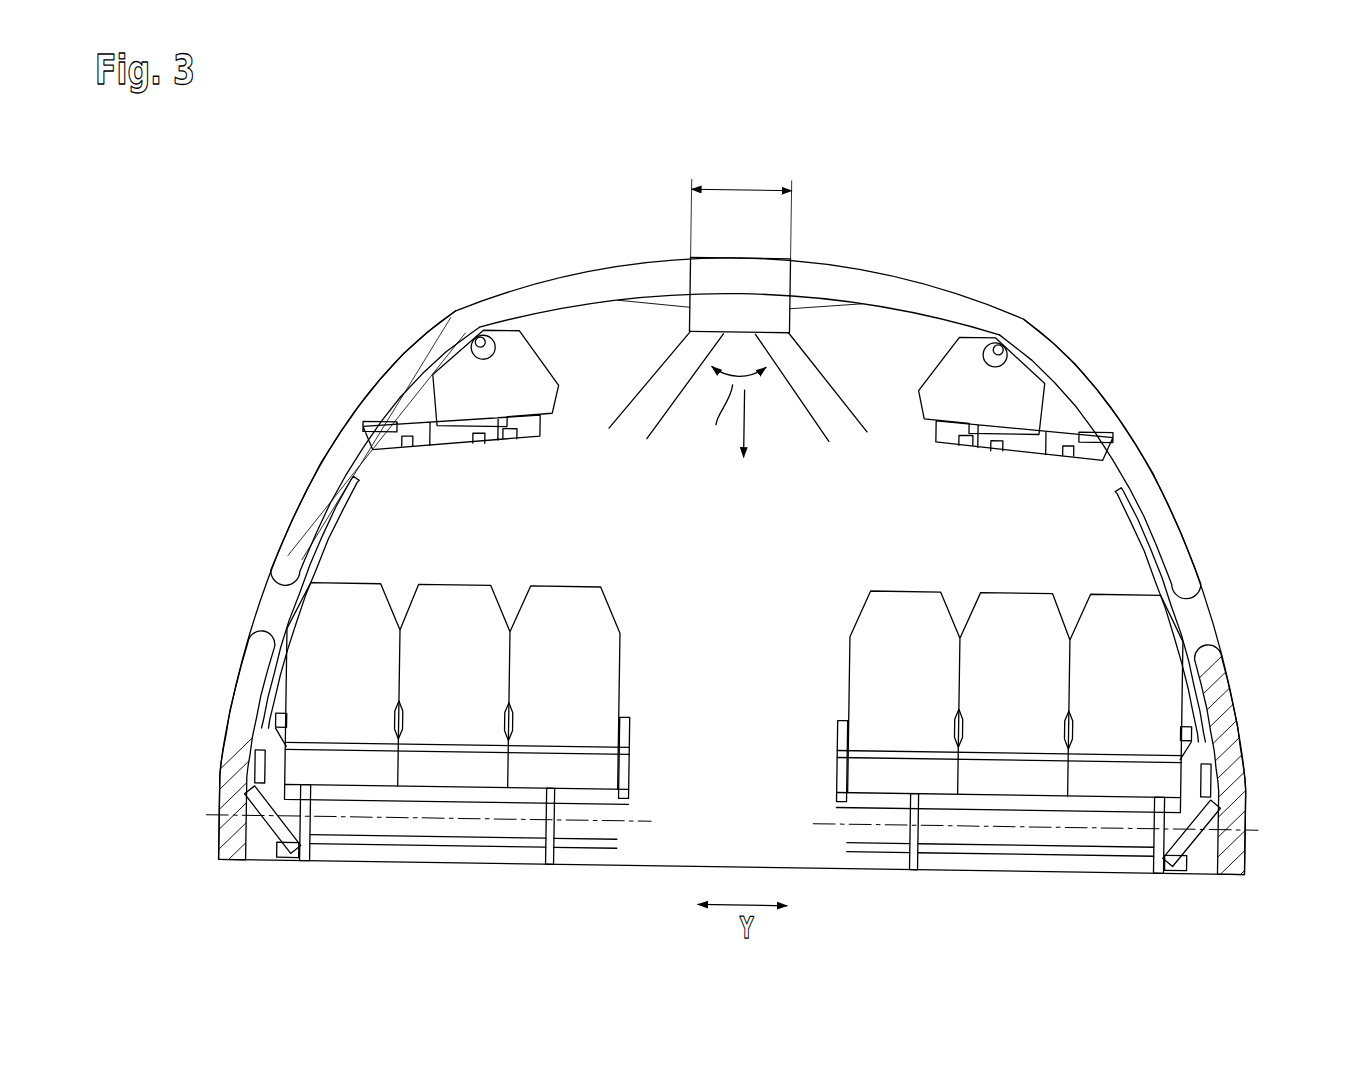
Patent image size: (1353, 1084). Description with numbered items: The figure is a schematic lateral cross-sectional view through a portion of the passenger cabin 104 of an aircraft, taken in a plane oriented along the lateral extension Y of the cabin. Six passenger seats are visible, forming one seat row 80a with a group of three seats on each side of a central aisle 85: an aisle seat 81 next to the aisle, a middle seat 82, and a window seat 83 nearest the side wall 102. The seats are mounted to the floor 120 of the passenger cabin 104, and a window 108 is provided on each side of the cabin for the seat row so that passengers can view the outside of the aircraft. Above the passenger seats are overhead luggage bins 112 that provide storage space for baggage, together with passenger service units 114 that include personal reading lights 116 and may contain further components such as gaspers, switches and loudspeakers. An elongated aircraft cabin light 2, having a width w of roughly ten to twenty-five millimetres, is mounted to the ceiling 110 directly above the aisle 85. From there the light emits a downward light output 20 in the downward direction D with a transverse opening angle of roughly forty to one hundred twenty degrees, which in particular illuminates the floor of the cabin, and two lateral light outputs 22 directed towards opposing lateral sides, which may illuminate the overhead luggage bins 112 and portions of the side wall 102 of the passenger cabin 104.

The elongated aircraft cabin light 2 is at (734, 310).
The downward light output 20 is at (663, 436).
The lateral light output 22 is at (628, 427).
The seat row 80a is at (593, 539).
The aisle seat 81 is at (628, 582).
The middle seat 82 is at (450, 780).
The window seat 83 is at (347, 585).
The central aisle 85 is at (735, 670).
The side wall 102 is at (383, 402).
The passenger cabin 104 is at (1041, 260).
The window 108 is at (232, 614).
The ceiling 110 is at (866, 282).
The overhead luggage bin 112 is at (513, 360).
The passenger service unit 114 is at (447, 460).
The personal reading light 116 is at (405, 452).
The floor 120 is at (851, 868).